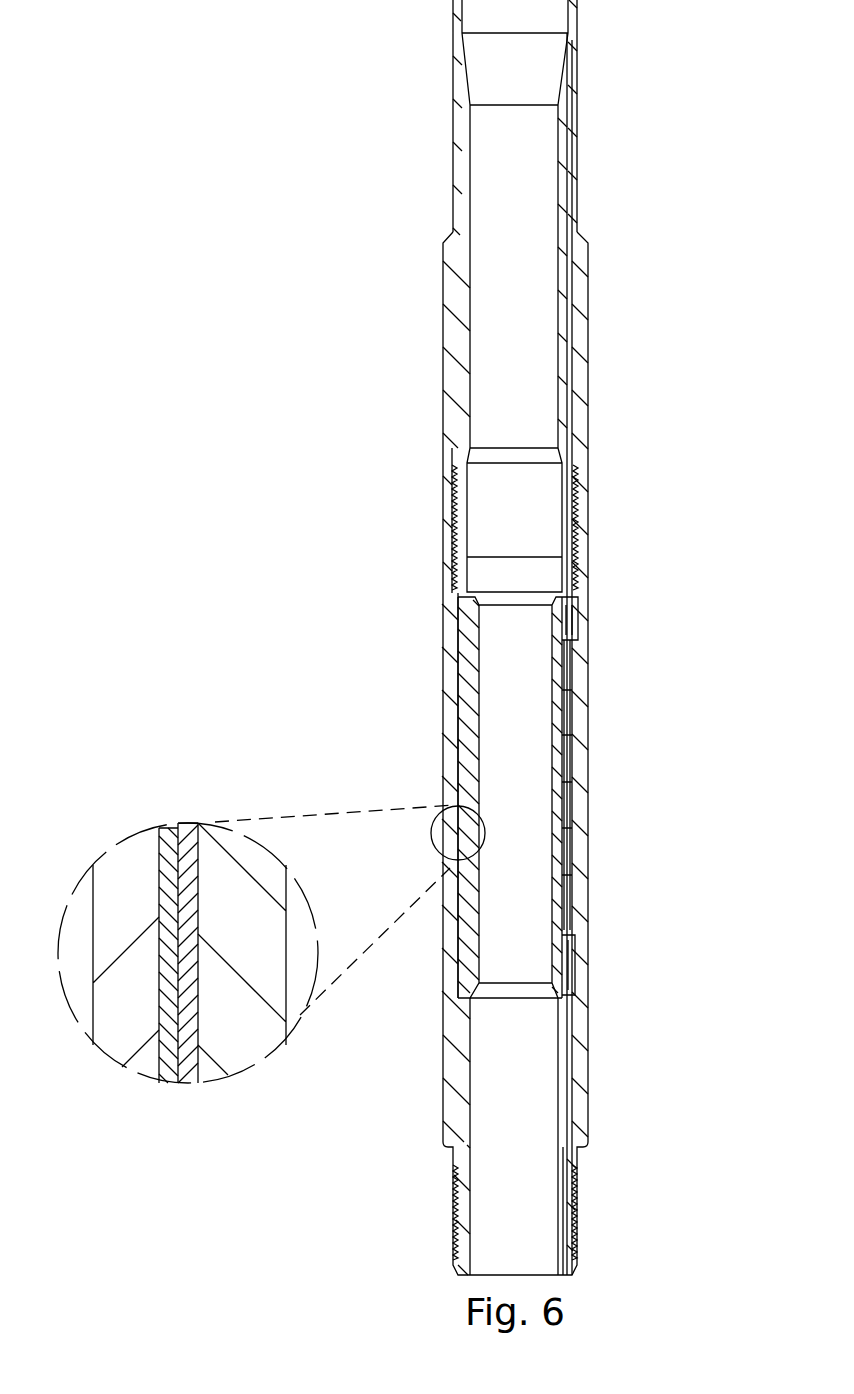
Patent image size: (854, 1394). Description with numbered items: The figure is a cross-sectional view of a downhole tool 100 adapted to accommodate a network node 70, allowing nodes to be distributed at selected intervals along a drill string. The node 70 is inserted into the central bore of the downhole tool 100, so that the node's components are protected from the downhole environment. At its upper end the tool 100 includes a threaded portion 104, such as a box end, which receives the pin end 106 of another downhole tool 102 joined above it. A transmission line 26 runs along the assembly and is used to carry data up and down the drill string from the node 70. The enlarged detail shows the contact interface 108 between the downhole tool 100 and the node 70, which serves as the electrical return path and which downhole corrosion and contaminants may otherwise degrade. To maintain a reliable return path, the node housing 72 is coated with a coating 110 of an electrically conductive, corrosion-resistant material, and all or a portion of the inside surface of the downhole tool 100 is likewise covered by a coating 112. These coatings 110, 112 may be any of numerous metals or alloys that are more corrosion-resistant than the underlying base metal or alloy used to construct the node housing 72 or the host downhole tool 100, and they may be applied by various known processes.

The transmission line 26 is at (570, 142).
The node 70 is at (510, 657).
The node housing 72 is at (469, 753).
The downhole tool 100 is at (585, 1275).
The downhole tool 102 is at (625, 0).
The threaded portion 104 is at (583, 517).
The pin end 106 is at (453, 490).
The contact interface 108 is at (195, 907).
The coating 110 is at (197, 1040).
The coating 112 is at (172, 1032).